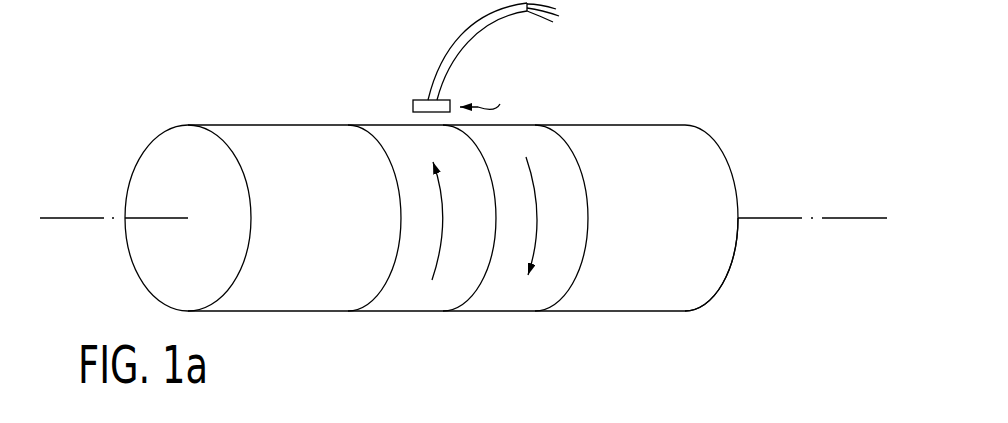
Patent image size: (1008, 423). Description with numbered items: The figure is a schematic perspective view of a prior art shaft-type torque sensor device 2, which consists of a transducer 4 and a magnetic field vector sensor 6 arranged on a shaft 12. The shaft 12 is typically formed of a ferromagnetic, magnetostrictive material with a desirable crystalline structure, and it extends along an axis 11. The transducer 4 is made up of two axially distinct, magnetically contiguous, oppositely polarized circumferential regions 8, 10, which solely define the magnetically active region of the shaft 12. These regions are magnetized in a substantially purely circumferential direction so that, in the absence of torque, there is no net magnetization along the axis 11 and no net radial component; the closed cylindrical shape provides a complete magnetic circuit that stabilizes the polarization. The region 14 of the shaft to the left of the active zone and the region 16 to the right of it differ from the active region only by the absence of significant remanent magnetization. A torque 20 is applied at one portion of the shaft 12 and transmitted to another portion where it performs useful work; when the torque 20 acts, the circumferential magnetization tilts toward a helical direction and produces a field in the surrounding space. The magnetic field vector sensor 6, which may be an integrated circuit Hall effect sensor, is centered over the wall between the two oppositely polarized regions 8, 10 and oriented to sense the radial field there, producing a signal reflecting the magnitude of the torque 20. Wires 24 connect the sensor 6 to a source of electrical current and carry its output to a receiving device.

The shaft-type torque sensor device 2 is at (252, 73).
The transducer 4 is at (519, 235).
The magnetic field vector sensor 6 is at (413, 107).
The circumferentially polarized region 8 is at (426, 235).
The circumferentially polarized region 10 is at (550, 287).
The axis 11 is at (77, 218).
The shaft 12 is at (700, 278).
The region of the shaft 14 is at (310, 140).
The region of the shaft 16 is at (677, 135).
The torque 20 is at (229, 124).
The wires 24 is at (556, 13).